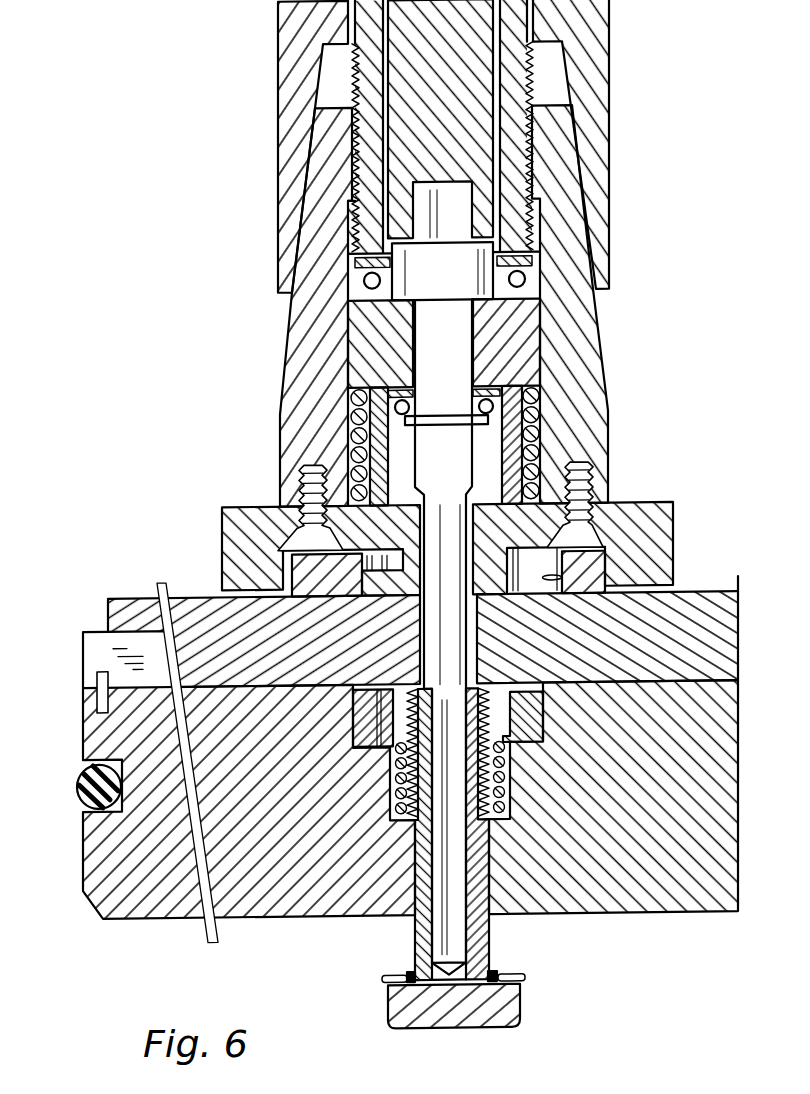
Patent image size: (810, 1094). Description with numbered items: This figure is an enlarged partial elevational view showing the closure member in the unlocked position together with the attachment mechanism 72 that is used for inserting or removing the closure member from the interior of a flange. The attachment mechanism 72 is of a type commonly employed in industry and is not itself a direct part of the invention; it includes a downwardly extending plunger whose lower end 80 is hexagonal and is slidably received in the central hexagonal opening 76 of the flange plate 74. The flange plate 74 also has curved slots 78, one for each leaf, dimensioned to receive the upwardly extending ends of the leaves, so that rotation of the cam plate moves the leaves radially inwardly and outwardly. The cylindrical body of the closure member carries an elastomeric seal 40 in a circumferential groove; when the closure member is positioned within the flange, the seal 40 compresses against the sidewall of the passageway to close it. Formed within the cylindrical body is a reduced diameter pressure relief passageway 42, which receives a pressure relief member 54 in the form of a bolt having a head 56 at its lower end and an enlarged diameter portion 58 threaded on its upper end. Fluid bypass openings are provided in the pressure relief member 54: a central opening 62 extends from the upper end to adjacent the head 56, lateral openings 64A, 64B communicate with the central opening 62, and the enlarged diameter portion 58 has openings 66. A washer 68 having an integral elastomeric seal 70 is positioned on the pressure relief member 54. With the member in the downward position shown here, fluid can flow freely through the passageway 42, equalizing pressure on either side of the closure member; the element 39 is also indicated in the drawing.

The attachment mechanism 72 is at (642, 291).
The flange plate 74 is at (592, 565).
The curved slots 78 is at (545, 579).
The central hexagonal opening 76 is at (468, 591).
The lower end of plunger 80 is at (433, 625).
The openings 66 is at (353, 726).
The enlarged diameter portion 58 is at (543, 724).
The lateral opening 64B is at (390, 800).
The pressure relief passageway 42 is at (435, 860).
The central opening 62 is at (450, 918).
The pressure relief member 54 is at (478, 926).
The lateral opening 64A is at (425, 958).
The elastomeric seal 70 is at (493, 976).
The washer 68 is at (520, 978).
The head 56 is at (492, 1014).
The locating pin 39 is at (100, 688).
The elastomeric seal 40 is at (78, 783).